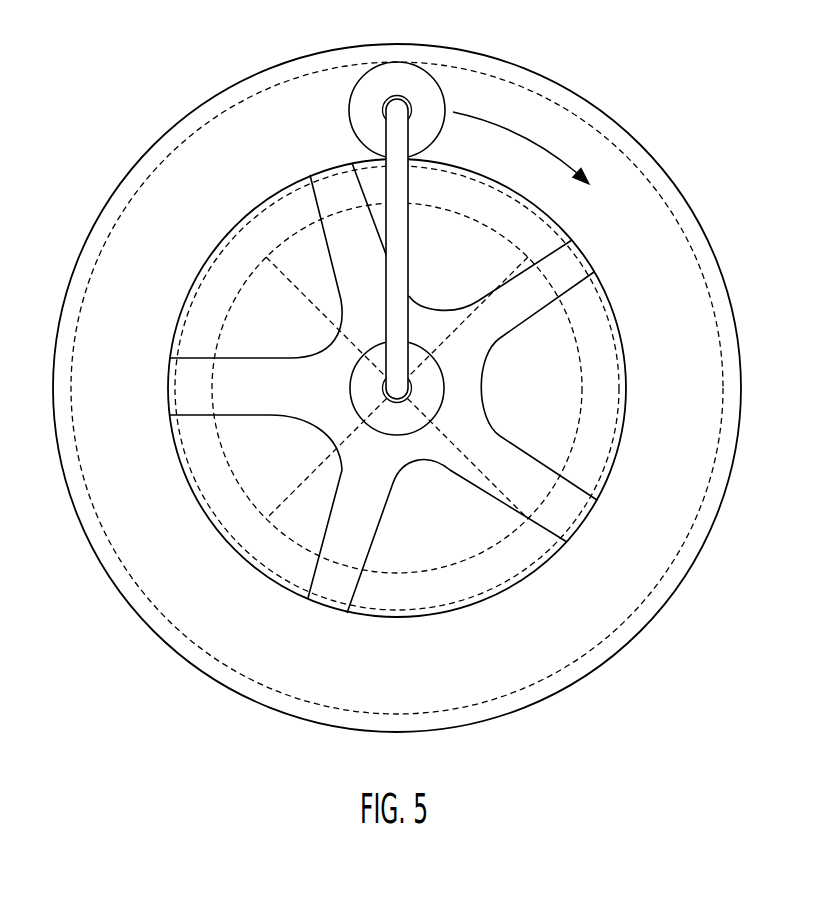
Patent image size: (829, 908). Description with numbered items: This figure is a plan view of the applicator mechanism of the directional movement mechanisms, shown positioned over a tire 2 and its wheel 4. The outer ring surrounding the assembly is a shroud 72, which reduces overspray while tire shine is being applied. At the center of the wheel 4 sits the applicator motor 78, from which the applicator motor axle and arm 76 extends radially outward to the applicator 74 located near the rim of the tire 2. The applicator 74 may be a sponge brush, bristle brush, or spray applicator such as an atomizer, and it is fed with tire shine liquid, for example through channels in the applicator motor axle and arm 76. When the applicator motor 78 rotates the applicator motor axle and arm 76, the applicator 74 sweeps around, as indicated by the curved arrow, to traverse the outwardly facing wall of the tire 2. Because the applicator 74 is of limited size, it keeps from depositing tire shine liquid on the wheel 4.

The tire 2 is at (538, 90).
The wheel 4 is at (595, 447).
The shroud 72 is at (613, 118).
The applicator 74 is at (442, 90).
The applicator motor axle and arm 76 is at (398, 298).
The applicator motor 78 is at (435, 402).